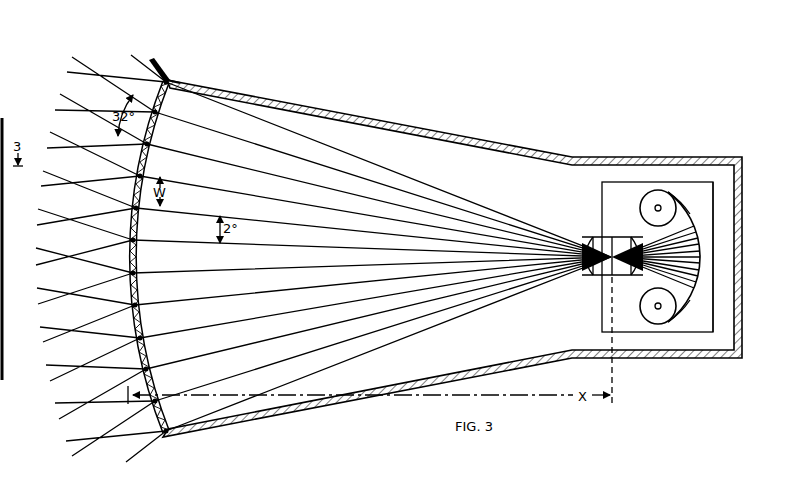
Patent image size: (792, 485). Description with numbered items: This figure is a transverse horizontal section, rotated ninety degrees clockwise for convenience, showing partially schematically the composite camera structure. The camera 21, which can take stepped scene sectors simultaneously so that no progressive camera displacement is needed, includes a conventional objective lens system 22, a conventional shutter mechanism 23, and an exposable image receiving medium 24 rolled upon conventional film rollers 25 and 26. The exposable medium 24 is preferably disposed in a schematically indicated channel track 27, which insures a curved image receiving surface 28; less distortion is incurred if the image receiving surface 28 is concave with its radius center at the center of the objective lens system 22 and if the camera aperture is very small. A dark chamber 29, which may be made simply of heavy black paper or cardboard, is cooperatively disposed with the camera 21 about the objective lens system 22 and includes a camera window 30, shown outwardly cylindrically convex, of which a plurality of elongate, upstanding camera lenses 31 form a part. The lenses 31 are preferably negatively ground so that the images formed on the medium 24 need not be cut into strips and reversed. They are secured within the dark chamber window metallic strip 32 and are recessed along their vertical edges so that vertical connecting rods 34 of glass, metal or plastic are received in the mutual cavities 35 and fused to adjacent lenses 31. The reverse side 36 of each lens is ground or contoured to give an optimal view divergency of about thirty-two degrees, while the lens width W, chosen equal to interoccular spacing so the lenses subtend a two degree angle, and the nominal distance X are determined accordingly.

The camera 21 is at (713, 254).
The objective lens system 22 is at (631, 237).
The shutter mechanism 23 is at (614, 362).
The exposable image receiving medium 24 is at (689, 216).
The film roller 25 is at (645, 196).
The film roller 26 is at (645, 319).
The channel track 27 is at (683, 206).
The image receiving surface 28 is at (699, 244).
The dark chamber 29 is at (523, 153).
The camera window 30 is at (178, 84).
The camera lenses 31 is at (149, 148).
The dark chamber window metallic strip 32 is at (169, 78).
The vertical connecting rods 34 is at (139, 302).
The mutual cavities 35 is at (140, 308).
The reverse side 36 is at (154, 130).